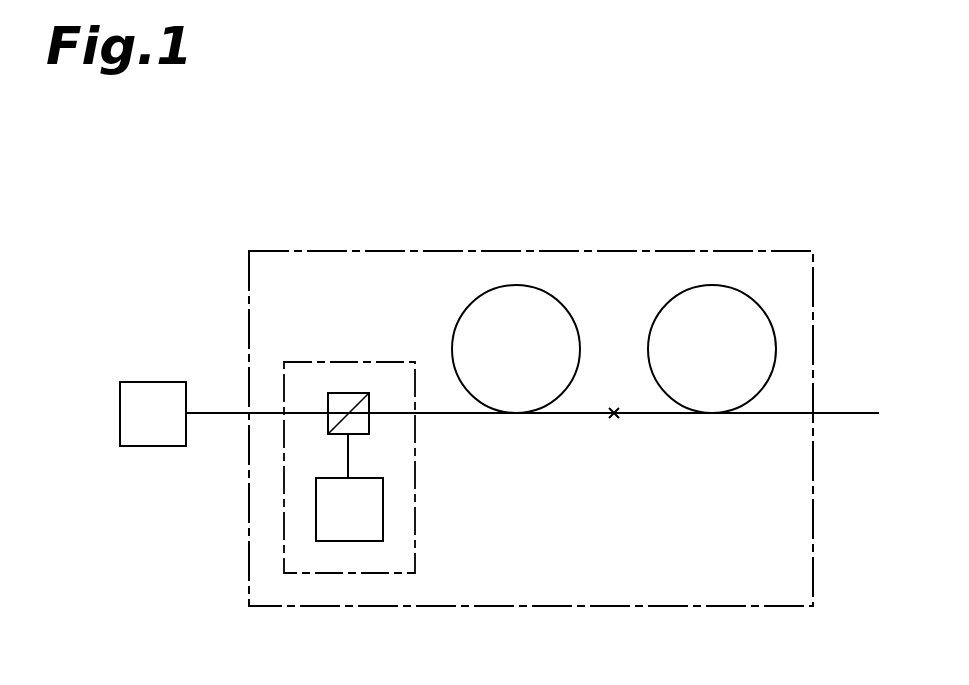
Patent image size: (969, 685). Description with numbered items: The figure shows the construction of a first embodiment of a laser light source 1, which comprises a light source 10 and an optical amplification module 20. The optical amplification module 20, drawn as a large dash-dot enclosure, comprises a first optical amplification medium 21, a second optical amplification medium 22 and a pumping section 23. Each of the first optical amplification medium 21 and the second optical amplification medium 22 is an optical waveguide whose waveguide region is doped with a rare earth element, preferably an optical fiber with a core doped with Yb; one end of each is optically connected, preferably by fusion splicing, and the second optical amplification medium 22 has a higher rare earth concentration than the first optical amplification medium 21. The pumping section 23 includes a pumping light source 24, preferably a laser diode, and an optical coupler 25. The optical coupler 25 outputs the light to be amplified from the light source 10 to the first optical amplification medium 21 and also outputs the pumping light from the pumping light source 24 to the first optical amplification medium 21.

The laser light source 1 is at (770, 168).
The light source 10 is at (160, 382).
The optical amplification module 20 is at (302, 250).
The first optical amplification medium 21 is at (524, 286).
The second optical amplification medium 22 is at (722, 286).
The pumping section 23 is at (415, 557).
The pumping light source 24 is at (383, 490).
The optical coupler 25 is at (349, 393).